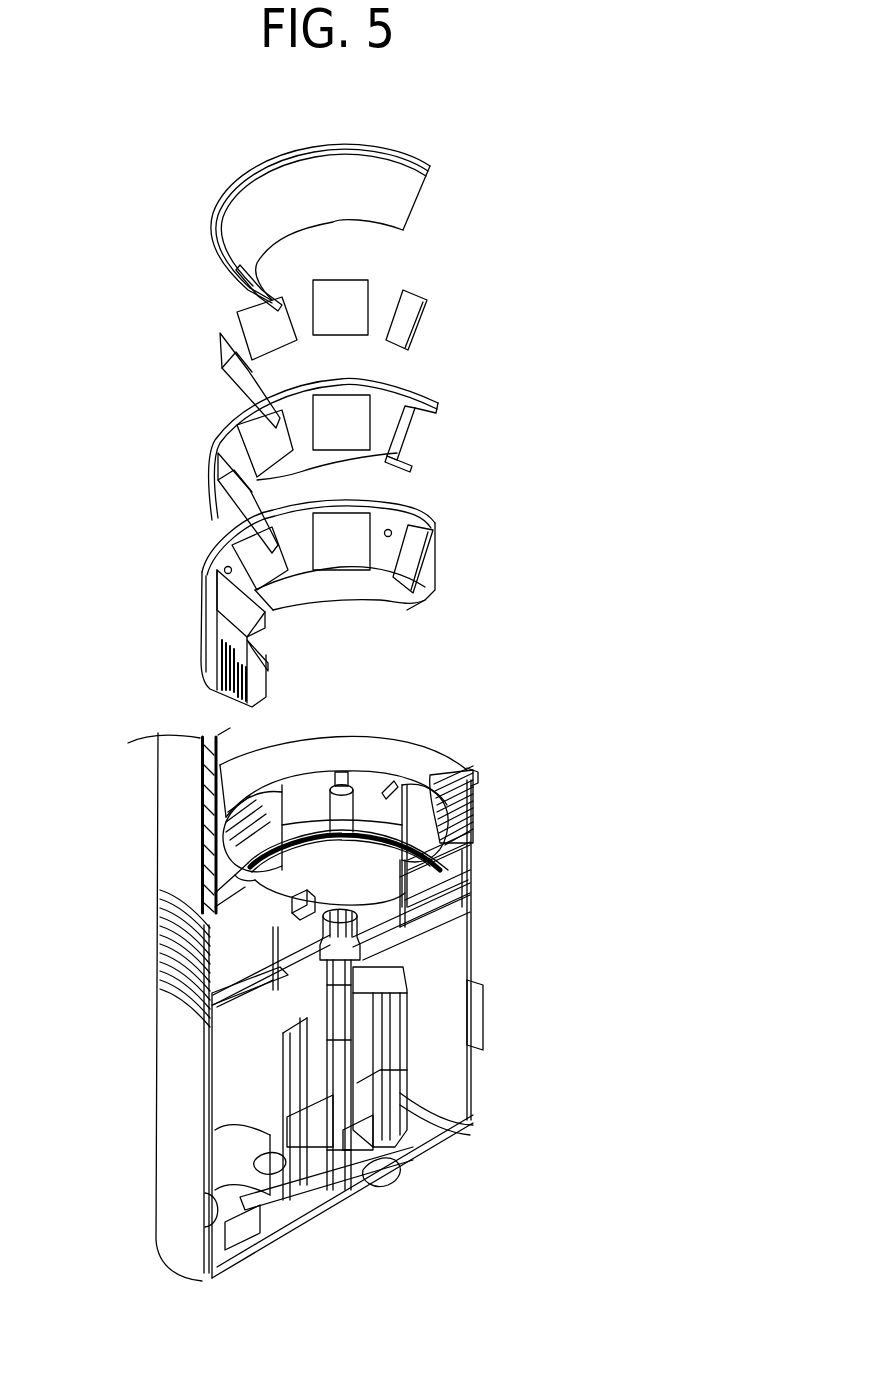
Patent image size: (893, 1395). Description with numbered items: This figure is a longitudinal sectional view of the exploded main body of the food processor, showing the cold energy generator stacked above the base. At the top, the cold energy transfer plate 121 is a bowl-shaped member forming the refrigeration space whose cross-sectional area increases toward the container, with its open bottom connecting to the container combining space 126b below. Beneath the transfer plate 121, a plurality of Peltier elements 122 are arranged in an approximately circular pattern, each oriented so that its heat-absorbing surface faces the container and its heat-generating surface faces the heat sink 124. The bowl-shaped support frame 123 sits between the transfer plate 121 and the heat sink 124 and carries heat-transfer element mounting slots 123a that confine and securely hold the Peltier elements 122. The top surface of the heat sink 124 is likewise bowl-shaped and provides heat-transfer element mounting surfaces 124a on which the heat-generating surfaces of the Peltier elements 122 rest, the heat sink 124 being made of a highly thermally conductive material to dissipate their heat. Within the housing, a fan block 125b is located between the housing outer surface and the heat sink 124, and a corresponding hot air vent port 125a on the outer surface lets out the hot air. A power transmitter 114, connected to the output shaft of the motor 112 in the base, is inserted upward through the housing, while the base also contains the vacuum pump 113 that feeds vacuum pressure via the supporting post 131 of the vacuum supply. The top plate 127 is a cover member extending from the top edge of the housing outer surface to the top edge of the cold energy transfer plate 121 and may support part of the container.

The motor 112 is at (353, 1050).
The vacuum pump 113 is at (235, 1090).
The power transmitter 114 is at (362, 928).
The cold energy transfer plate 121 is at (403, 190).
The Peltier element 122 is at (410, 318).
The support frame 123 is at (440, 405).
The heat-transfer element mounting slot 123a is at (340, 422).
The heat sink 124 is at (430, 580).
The heat-transfer element mounting surface 124a is at (343, 547).
The hot air vent port 125a is at (472, 797).
The fan block 125b is at (433, 837).
The container combining space 126b is at (358, 870).
The top plate 127 is at (353, 747).
The supporting post 131 is at (172, 806).